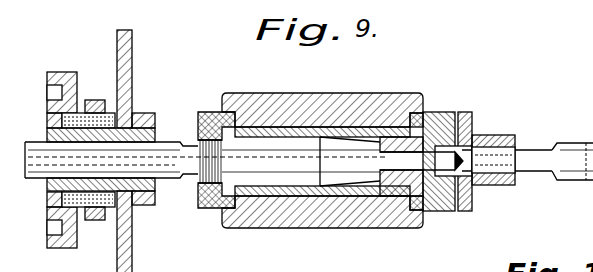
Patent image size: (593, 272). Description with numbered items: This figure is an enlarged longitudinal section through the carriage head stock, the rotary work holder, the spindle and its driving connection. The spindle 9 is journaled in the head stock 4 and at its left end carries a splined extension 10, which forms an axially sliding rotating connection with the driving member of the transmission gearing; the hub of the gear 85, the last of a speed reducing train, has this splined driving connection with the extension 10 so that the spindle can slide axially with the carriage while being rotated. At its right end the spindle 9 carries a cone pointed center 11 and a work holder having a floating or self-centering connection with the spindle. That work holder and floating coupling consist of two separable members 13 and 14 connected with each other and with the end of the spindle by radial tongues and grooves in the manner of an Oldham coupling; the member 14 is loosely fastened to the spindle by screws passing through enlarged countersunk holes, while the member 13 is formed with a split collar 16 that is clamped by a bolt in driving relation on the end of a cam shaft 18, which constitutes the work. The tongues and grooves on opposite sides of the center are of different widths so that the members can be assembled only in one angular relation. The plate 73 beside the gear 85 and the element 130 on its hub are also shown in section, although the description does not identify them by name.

The head stock 4 is at (323, 93).
The spindle 9 is at (299, 172).
The splined extension 10 is at (169, 180).
The cone pointed center 11 is at (458, 237).
The separable member of the work holder 13 is at (470, 113).
The separable member of the work holder 14 is at (447, 113).
The split collar 16 is at (493, 135).
The cam shaft 18 is at (570, 143).
The flange plate 73 is at (132, 70).
The gear 85 is at (60, 72).
The retaining ring 130 is at (90, 222).